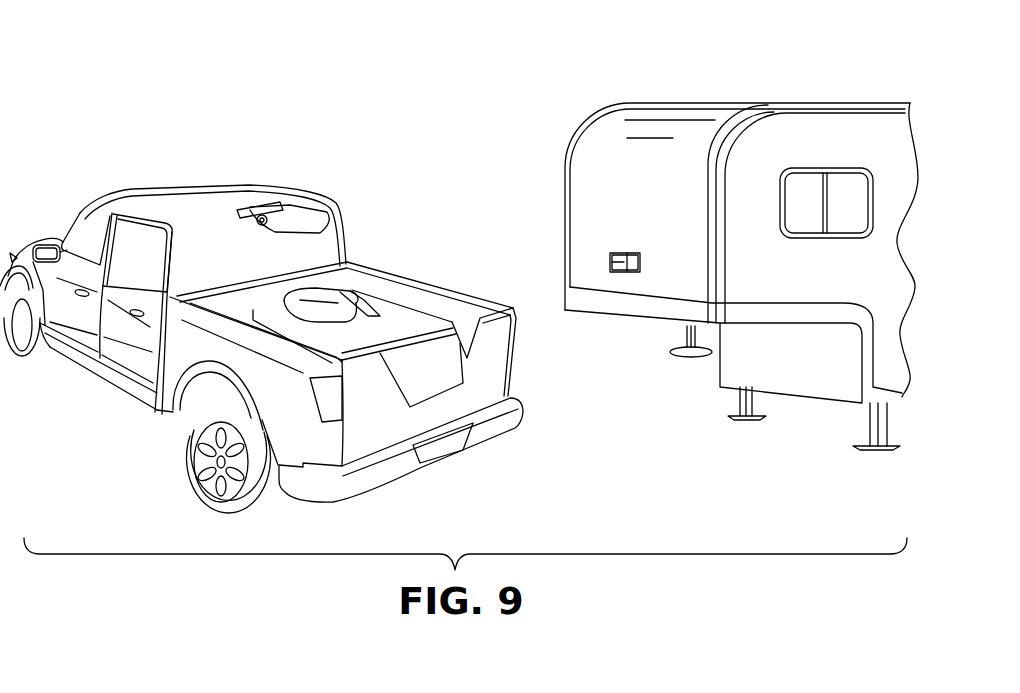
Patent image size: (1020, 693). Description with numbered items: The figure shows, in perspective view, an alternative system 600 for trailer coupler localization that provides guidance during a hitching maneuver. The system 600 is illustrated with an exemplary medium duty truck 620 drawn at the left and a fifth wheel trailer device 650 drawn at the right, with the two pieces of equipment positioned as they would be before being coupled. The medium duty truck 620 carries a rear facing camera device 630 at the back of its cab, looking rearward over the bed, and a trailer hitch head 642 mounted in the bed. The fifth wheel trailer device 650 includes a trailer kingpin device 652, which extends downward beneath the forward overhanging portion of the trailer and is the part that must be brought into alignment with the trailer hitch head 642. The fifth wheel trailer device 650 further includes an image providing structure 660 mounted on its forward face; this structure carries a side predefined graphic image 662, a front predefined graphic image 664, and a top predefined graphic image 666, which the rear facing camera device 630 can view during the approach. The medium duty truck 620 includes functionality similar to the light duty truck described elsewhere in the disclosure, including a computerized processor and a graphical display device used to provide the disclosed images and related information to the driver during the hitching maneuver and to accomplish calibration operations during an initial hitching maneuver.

The system 600 is at (257, 130).
The medium duty truck 620 is at (80, 215).
The rear facing camera device 630 is at (338, 219).
The trailer hitch head 642 is at (316, 291).
The fifth wheel trailer device 650 is at (700, 103).
The trailer kingpin device 652 is at (686, 334).
The image providing structure 660 is at (610, 262).
The side predefined graphic image 662 is at (641, 264).
The front predefined graphic image 664 is at (610, 268).
The top predefined graphic image 666 is at (623, 253).